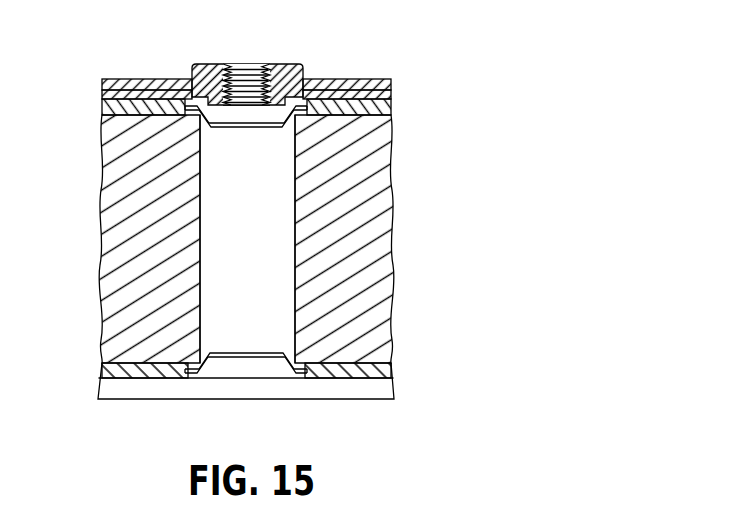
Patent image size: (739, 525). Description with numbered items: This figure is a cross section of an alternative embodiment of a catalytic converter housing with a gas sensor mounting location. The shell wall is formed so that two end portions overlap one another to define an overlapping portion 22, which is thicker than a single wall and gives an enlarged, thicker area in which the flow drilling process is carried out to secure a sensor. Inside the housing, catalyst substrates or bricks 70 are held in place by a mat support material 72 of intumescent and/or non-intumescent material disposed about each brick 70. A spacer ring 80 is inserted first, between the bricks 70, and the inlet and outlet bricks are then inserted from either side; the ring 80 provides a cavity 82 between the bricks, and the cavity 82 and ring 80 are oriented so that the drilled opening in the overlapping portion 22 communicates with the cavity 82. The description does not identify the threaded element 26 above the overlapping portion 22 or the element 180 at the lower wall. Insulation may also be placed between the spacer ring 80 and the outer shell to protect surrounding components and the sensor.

The overlapping portion 22 is at (140, 90).
The threaded nut insert 26 is at (293, 48).
The substrate 70 is at (140, 243).
The mat support material 72 is at (380, 110).
The spacer ring 80 is at (210, 157).
The cavity 82 is at (282, 127).
The lower cup 180 is at (213, 352).